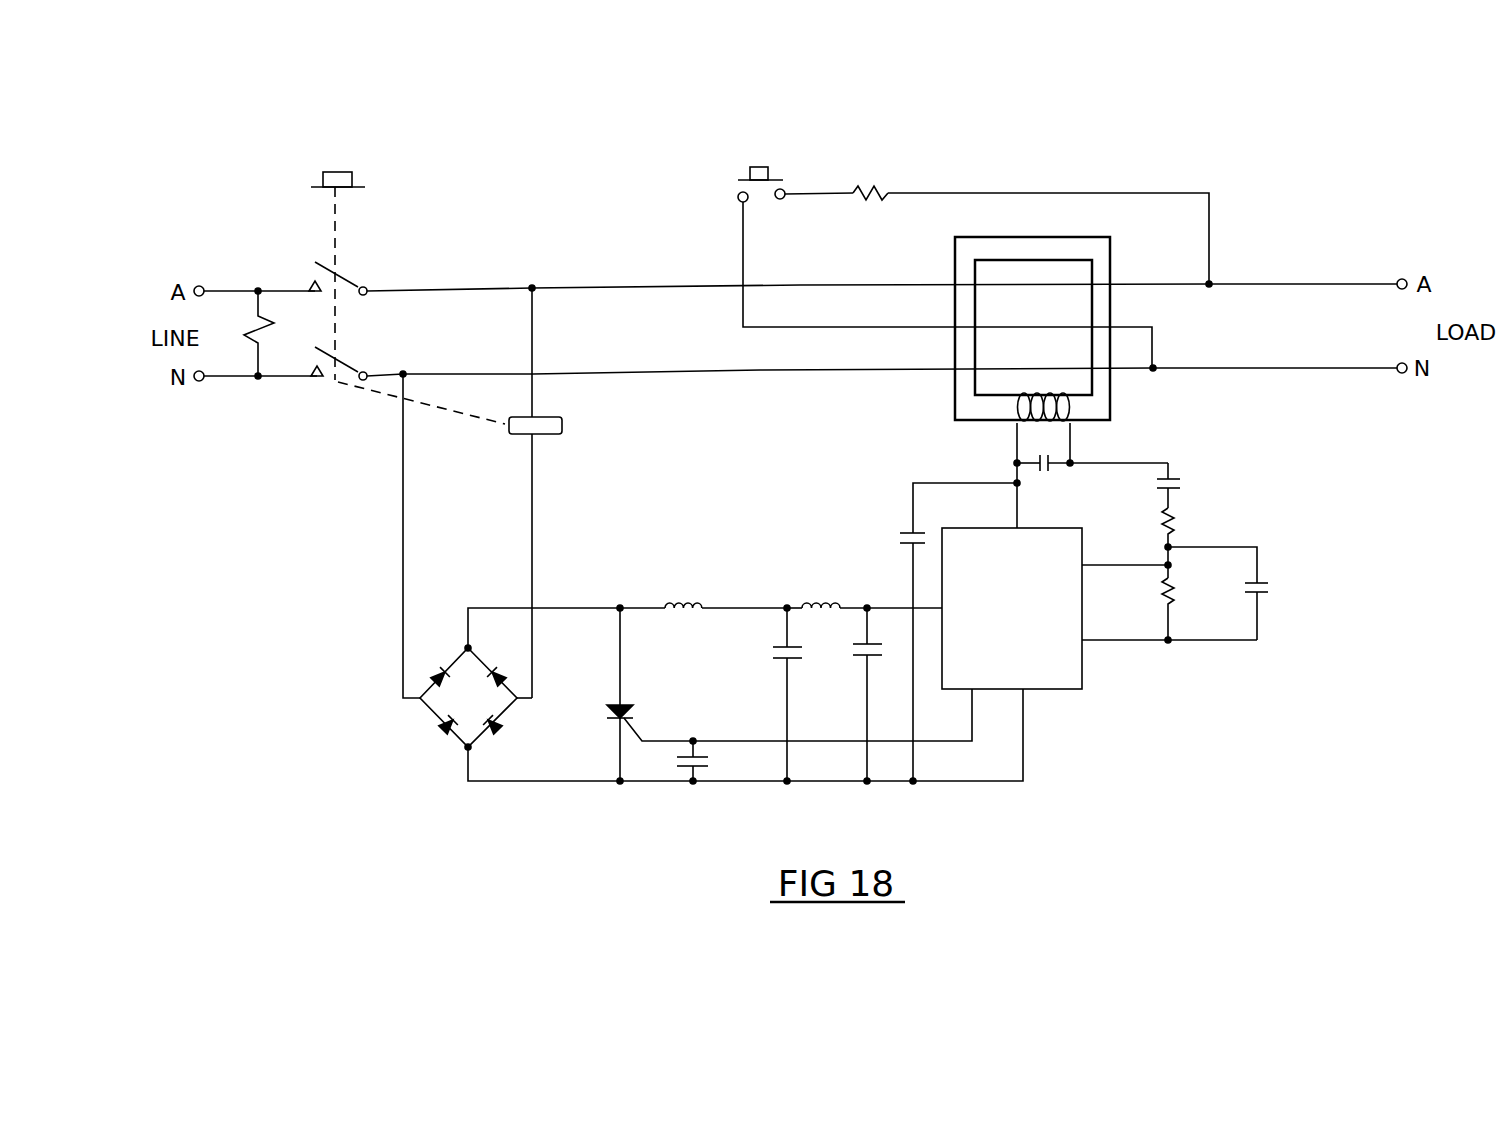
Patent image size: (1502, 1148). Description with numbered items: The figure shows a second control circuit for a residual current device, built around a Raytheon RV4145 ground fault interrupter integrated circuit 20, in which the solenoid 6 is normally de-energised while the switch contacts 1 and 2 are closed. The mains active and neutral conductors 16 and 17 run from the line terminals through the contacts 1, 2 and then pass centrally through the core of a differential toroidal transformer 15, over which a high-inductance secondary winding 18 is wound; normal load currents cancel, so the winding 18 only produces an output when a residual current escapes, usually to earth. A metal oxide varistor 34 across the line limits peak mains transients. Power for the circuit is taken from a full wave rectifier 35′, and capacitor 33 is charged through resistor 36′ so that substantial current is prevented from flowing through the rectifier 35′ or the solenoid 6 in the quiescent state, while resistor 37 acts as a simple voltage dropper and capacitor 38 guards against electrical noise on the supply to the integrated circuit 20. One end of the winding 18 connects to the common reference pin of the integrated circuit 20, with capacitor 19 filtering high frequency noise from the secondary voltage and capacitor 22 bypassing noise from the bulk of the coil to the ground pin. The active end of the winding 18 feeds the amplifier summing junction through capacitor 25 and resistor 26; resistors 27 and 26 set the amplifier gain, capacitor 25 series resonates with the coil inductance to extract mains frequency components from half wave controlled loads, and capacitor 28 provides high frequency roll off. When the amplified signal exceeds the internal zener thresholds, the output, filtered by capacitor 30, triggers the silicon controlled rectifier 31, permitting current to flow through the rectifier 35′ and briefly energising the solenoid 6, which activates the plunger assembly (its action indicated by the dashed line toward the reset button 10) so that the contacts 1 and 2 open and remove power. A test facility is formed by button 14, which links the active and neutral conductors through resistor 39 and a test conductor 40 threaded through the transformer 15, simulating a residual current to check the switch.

The contact 1 is at (317, 368).
The contact 2 is at (345, 360).
The solenoid 6 is at (562, 422).
The reset button / latch 10 is at (348, 165).
The button 14 is at (777, 168).
The differential toroidal transformer 15 is at (1105, 400).
The mains active conductor 16 is at (1318, 283).
The mains neutral conductor 17 is at (1325, 365).
The secondary winding 18 is at (1012, 412).
The capacitor 19 is at (1053, 472).
The ground fault interrupter integrated circuit 20 is at (1058, 682).
The capacitor 22 is at (902, 528).
The capacitor 25 is at (1183, 482).
The resistor 26 is at (1178, 517).
The resistor 27 is at (1178, 587).
The capacitor 28 is at (1270, 590).
The capacitor 30 is at (682, 770).
The silicon controlled rectifier 31 is at (612, 722).
The capacitor 33 is at (770, 642).
The metal oxide varistor 34 is at (248, 315).
The full wave rectifier 35′ is at (477, 707).
The resistor 36′ is at (673, 602).
The resistor 37 is at (813, 598).
The capacitor 38 is at (860, 638).
The resistor 39 is at (878, 187).
The test conductor 40 is at (1000, 325).